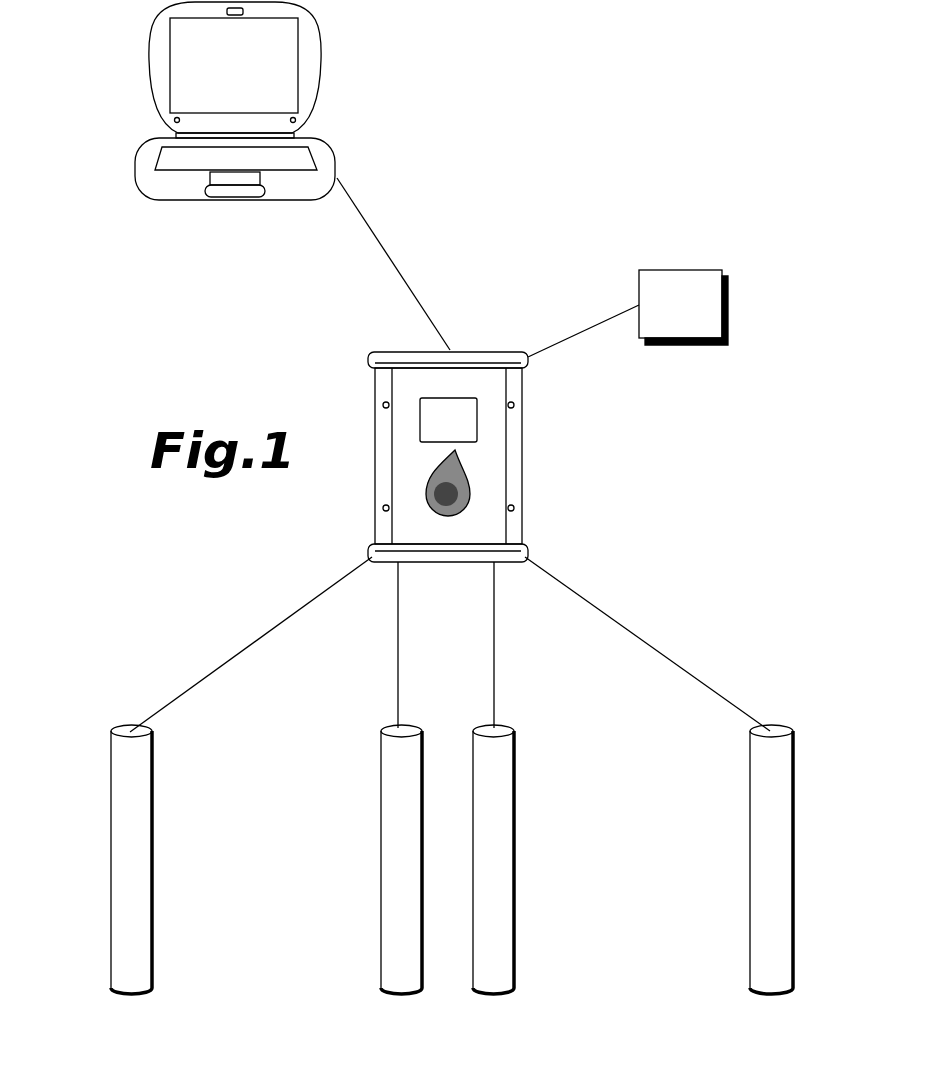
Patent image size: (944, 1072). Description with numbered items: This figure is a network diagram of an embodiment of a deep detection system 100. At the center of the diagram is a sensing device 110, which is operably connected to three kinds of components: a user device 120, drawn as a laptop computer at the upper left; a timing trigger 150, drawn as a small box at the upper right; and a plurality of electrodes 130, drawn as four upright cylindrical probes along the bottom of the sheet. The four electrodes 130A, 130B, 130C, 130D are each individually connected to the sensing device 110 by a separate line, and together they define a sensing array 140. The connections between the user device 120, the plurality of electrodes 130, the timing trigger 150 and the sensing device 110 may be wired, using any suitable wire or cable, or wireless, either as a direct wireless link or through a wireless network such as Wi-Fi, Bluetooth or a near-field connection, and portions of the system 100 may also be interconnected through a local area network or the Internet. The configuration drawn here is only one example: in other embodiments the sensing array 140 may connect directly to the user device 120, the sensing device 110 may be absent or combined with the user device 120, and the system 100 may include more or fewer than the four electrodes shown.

The deep detection system 100 is at (568, 215).
The sensing device 110 is at (522, 458).
The user device 120 is at (323, 47).
The plurality of electrodes 130 is at (453, 859).
The electrode 130A is at (111, 903).
The electrode 130B is at (381, 903).
The electrode 130C is at (514, 903).
The electrode 130D is at (793, 905).
The sensing array 140 is at (692, 612).
The timing trigger 150 is at (728, 300).